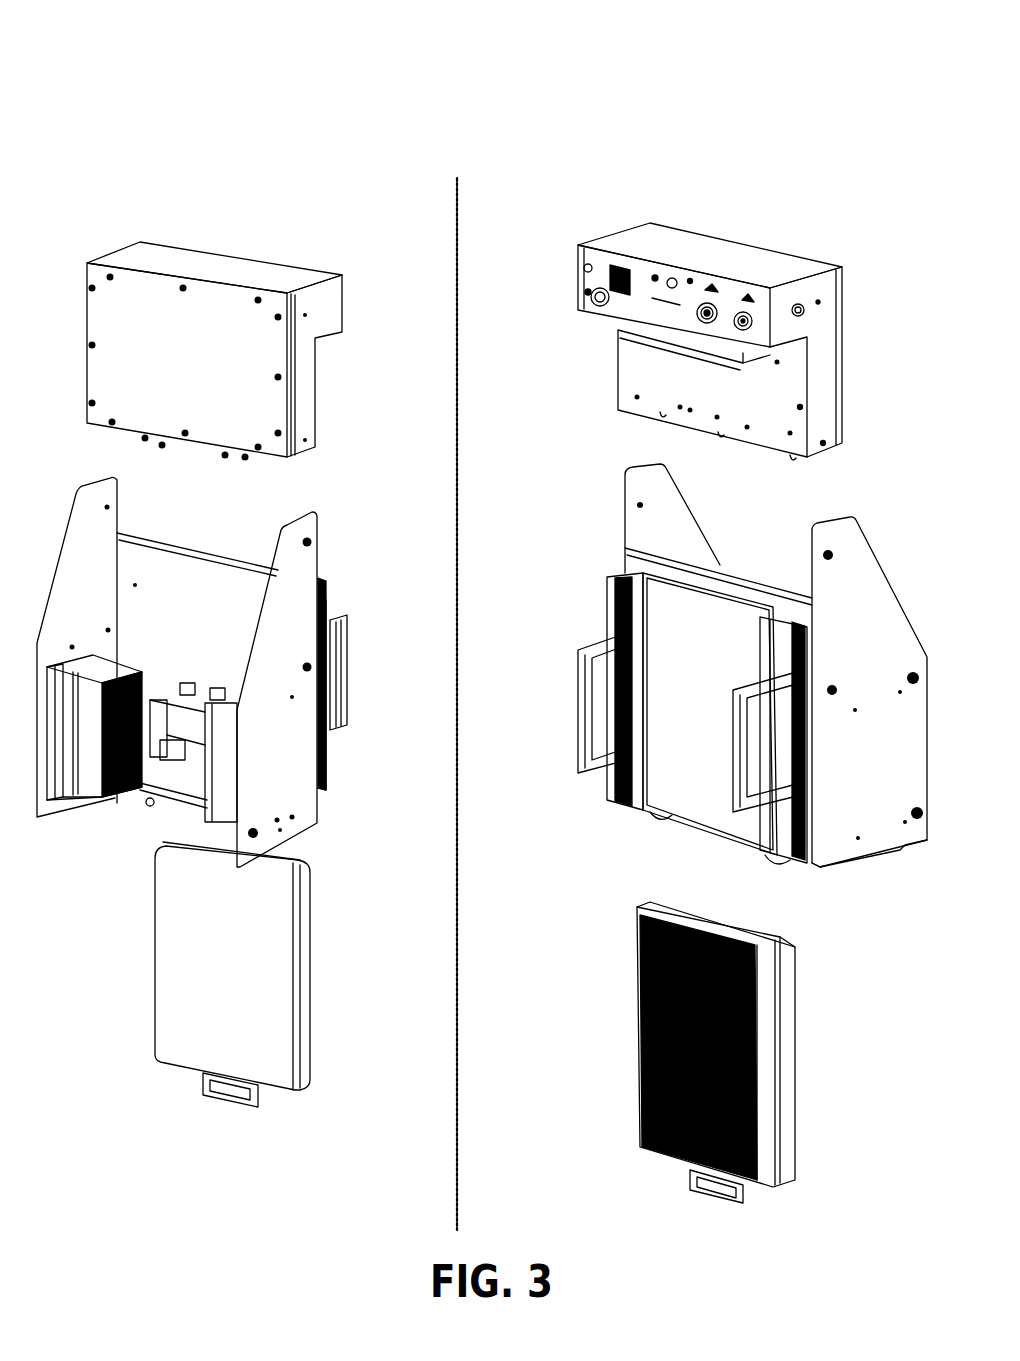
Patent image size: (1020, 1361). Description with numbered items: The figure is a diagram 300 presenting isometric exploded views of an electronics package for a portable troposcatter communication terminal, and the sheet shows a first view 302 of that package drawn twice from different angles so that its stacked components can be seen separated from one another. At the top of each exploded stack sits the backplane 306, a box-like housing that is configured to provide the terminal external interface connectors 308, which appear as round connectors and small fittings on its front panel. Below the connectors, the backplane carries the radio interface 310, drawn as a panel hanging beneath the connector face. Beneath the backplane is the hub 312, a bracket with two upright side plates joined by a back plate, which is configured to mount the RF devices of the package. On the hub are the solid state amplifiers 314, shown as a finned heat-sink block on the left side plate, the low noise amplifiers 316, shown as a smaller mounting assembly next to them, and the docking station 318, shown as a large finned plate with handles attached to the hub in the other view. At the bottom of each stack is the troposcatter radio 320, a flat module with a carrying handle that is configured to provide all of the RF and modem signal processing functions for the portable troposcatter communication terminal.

The diagram 300 is at (128, 30).
The first view 302 is at (204, 130).
The backplane 306 is at (303, 247).
The terminal external interface connectors 308 is at (580, 320).
The radio interface 310 is at (647, 335).
The hub 312 is at (342, 538).
The solid state amplifiers (SSPAs) 314 is at (92, 818).
The low noise amplifiers (LNAs) 316 is at (187, 790).
The docking station 318 is at (683, 800).
The troposcatter radio 320 is at (130, 1032).